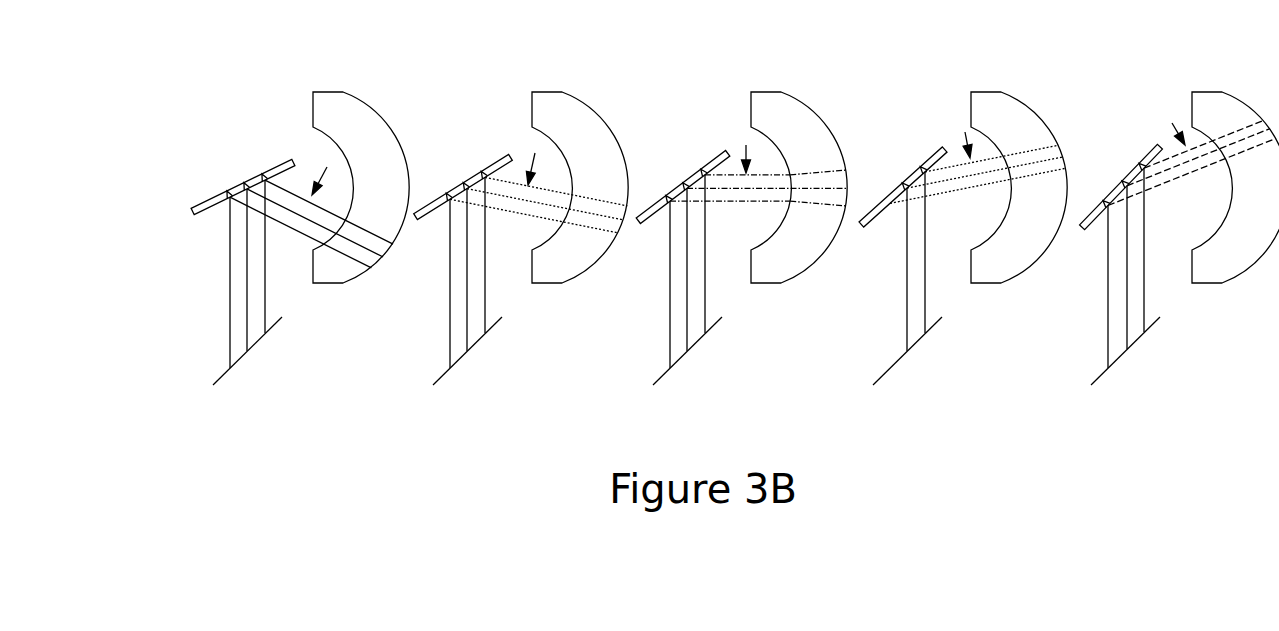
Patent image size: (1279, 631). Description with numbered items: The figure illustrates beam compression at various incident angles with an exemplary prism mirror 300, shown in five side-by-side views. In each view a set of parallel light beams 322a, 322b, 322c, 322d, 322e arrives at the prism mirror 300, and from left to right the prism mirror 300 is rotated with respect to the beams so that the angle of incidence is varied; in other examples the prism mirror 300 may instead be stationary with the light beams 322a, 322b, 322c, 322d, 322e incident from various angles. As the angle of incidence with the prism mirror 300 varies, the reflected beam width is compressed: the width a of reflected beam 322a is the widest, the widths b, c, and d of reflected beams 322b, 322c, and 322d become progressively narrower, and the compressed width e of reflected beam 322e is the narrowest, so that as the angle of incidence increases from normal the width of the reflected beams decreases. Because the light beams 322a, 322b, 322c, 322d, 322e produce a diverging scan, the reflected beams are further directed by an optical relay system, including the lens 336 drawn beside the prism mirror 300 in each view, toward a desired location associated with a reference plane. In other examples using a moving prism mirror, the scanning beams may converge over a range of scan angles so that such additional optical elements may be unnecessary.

The prism mirror 300 is at (275, 165).
The lens 336 is at (338, 103).
The light beam 322a is at (210, 310).
The light beam 322b is at (432, 313).
The light beam 322c is at (651, 315).
The light beam 322d is at (871, 314).
The light beam 322e is at (1093, 314).
The width of reflected beam a is at (292, 232).
The width of reflected beam b is at (516, 220).
The width of reflected beam c is at (746, 205).
The width of reflected beam d is at (978, 190).
The width of reflected beam e is at (1200, 172).